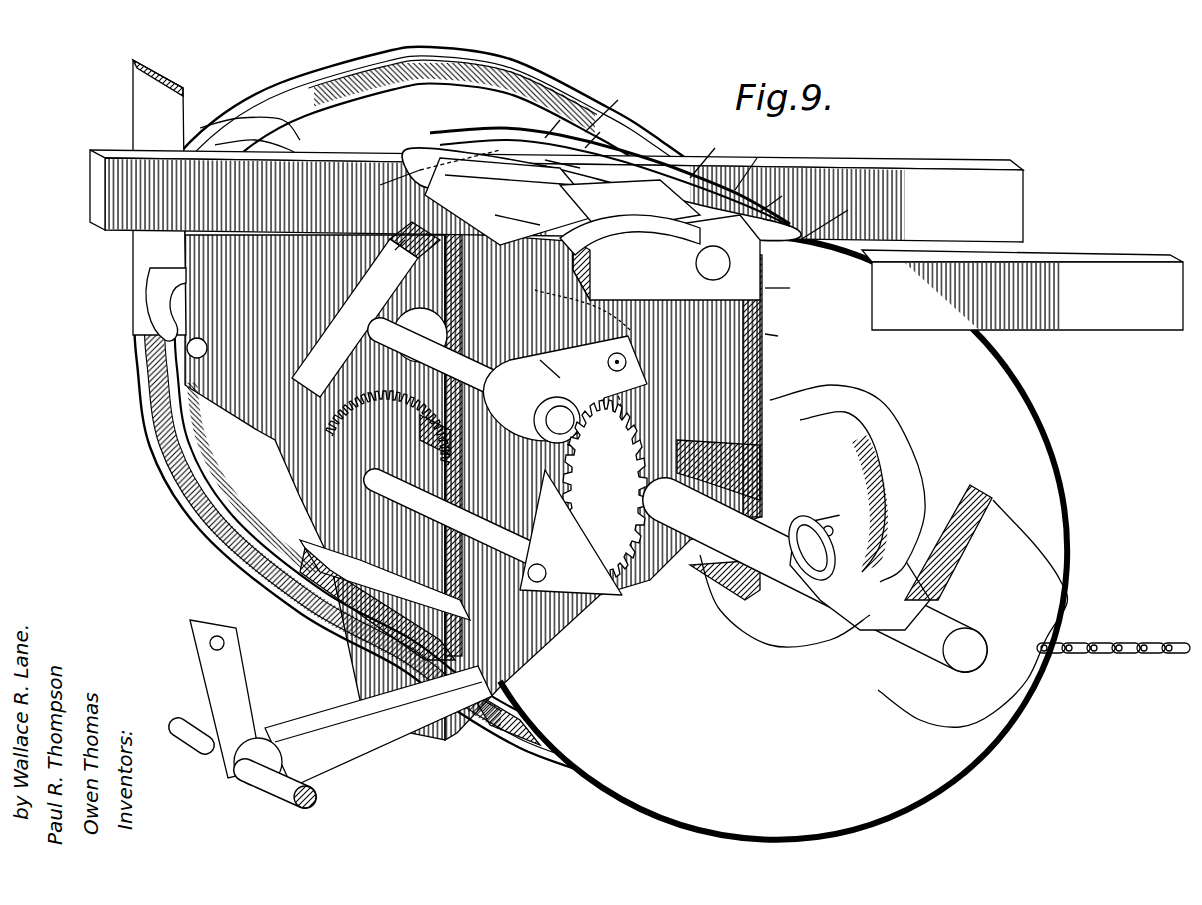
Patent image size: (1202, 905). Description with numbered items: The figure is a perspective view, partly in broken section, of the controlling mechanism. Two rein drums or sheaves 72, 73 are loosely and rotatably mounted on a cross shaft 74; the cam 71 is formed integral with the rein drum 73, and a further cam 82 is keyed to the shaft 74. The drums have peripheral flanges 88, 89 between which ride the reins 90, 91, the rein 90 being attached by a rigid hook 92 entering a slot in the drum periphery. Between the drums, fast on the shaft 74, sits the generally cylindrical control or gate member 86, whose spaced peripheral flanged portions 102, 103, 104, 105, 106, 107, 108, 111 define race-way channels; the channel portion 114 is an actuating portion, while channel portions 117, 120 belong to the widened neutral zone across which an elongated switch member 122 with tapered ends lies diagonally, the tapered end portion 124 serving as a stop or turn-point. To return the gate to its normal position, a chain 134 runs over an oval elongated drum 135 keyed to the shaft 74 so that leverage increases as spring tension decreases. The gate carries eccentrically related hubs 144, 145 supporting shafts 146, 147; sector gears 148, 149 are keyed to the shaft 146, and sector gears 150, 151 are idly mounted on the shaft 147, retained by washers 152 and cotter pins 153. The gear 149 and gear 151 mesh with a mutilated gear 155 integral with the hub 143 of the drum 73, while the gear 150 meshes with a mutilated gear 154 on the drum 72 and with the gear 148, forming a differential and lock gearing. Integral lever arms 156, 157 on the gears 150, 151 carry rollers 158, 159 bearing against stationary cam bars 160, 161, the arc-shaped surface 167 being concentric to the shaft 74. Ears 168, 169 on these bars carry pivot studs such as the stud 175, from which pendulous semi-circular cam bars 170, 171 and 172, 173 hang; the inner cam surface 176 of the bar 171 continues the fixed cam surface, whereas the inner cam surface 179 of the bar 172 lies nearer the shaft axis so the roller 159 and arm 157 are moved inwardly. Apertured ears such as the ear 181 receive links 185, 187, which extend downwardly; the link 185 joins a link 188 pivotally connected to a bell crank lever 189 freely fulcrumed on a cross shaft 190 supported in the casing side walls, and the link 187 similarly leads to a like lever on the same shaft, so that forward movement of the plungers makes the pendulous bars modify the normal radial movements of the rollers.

The cam 71 is at (866, 428).
The rein drum 72 is at (310, 78).
The rein drum 73 is at (783, 538).
The cross shaft 74 is at (826, 586).
The cam 82 is at (973, 606).
The control gate member 86 is at (395, 660).
The peripheral flange 88 is at (340, 115).
The peripheral flange 89 is at (836, 216).
The rein 90 is at (244, 110).
The rein 91 is at (784, 194).
The rigid hook 92 is at (232, 132).
The peripheral flanged portion 102 is at (300, 630).
The peripheral flanged portion 103 is at (350, 660).
The peripheral flanged portion 104 is at (635, 138).
The peripheral flanged portion 105 is at (655, 158).
The peripheral flanged portion 106 is at (460, 152).
The peripheral flanged portion 107 is at (560, 157).
The peripheral flanged portion 108 is at (630, 204).
The peripheral flanged portion 111 is at (517, 214).
The race-way channel portion 114 is at (340, 622).
The channel portion 117 is at (384, 180).
The channel portion 120 is at (603, 470).
The switch member 122 is at (512, 201).
The tapered end portion 124 is at (605, 131).
The chain 134 is at (790, 575).
The elongated drum 135 is at (860, 572).
The hub 143 is at (762, 460).
The eccentric hub 144 is at (400, 470).
The eccentric hub 145 is at (392, 312).
The shaft 146 is at (375, 518).
The shaft 147 is at (405, 355).
The sector gear 148 is at (387, 428).
The sector gear 149 is at (571, 532).
The sector gear 150 is at (355, 318).
The sector gear 151 is at (574, 424).
The washer 152 is at (565, 388).
The cotter pin 153 is at (598, 372).
The mutilated gear 154 is at (424, 435).
The mutilated gear 155 is at (605, 490).
The lever arm 156 is at (420, 215).
The lever arm 157 is at (546, 361).
The roller 158 is at (428, 302).
The roller 159 is at (598, 312).
The cam bar 160 is at (95, 196).
The cam bar 161 is at (1022, 290).
The arc-shaped cam surface 167 is at (789, 334).
The ear 168 is at (563, 120).
The ear 169 is at (601, 194).
The semi-circular cam bar 170 is at (617, 107).
The semi-circular cam bar 171 is at (398, 134).
The semi-circular cam bar 172 is at (794, 286).
The semi-circular cam bar 173 is at (666, 257).
The pivot stud 175 is at (695, 263).
The inner cam surface 176 is at (258, 430).
The inner cam surface 179 is at (606, 270).
The apertured ear 181 is at (160, 340).
The link 185 is at (470, 407).
The link 187 is at (630, 235).
The link 188 is at (480, 718).
The bell crank lever 189 is at (378, 726).
The cross shaft 190 is at (300, 805).